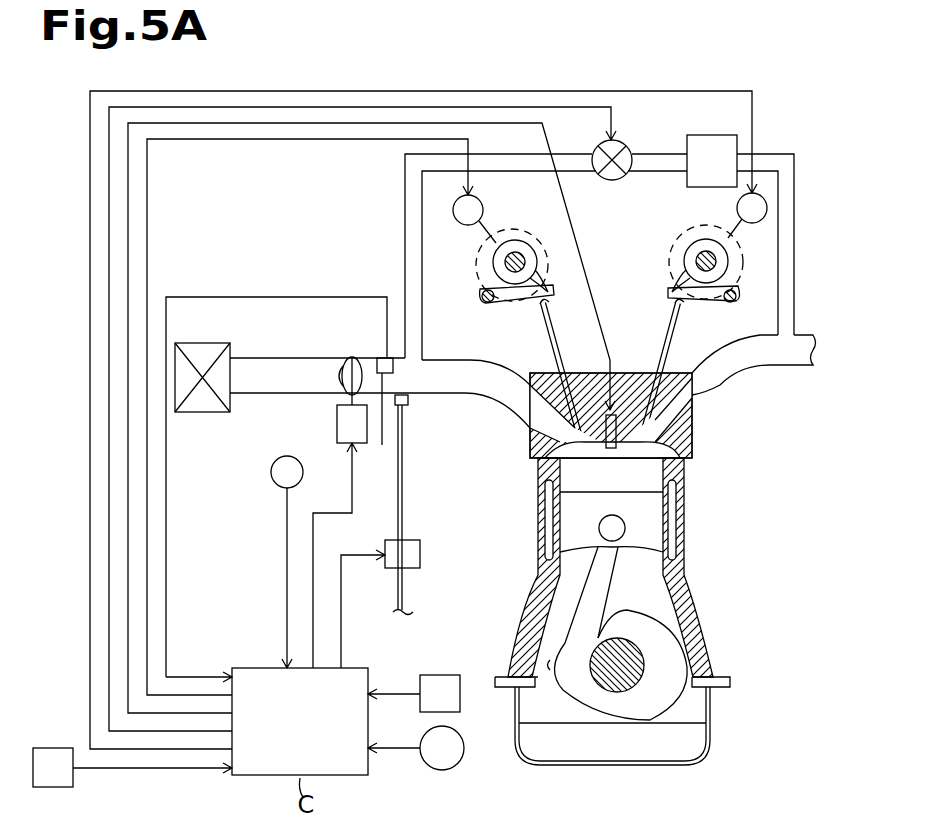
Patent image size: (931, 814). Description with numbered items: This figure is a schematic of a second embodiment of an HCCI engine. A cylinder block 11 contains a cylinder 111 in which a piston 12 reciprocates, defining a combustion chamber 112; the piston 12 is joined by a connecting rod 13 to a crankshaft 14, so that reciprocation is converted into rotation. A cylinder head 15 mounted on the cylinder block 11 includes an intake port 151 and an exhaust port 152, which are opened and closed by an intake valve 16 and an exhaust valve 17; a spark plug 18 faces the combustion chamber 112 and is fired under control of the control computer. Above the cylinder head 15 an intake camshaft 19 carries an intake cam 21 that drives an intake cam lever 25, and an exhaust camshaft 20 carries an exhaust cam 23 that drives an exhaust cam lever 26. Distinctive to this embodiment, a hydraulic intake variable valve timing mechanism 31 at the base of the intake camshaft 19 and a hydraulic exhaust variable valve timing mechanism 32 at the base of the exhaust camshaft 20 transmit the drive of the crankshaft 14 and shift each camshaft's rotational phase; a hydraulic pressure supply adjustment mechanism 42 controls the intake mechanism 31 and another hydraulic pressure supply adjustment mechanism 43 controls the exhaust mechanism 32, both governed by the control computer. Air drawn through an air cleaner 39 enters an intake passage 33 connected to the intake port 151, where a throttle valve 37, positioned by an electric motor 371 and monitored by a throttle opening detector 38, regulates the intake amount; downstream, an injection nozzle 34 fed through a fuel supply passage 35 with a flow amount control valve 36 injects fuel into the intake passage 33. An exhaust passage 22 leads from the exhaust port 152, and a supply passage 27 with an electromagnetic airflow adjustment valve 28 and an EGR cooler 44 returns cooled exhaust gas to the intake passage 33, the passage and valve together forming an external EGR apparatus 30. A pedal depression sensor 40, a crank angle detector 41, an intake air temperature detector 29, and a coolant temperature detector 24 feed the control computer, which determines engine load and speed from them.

The cylinder block 11 is at (712, 634).
The cylinder 111 is at (684, 512).
The combustion chamber 112 is at (660, 475).
The piston 12 is at (546, 562).
The connecting rod 13 is at (600, 594).
The crankshaft 14 is at (598, 678).
The cylinder head 15 is at (530, 450).
The intake port 151 is at (530, 437).
The exhaust port 152 is at (665, 434).
The intake valve 16 is at (546, 468).
The exhaust valve 17 is at (675, 393).
The spark plug 18 is at (612, 458).
The intake camshaft 19 is at (514, 252).
The exhaust camshaft 20 is at (717, 254).
The intake cam 21 is at (537, 247).
The exhaust passage 22 is at (776, 362).
The exhaust cam 23 is at (737, 298).
The coolant temperature detector 24 is at (440, 675).
The intake cam lever 25 is at (509, 305).
The exhaust cam lever 26 is at (705, 302).
The supply passage 27 is at (657, 178).
The airflow adjustment valve 28 is at (613, 183).
The intake air temperature detector 29 is at (379, 418).
The external EGR apparatus 30 is at (662, 226).
The intake variable valve timing mechanism 31 is at (556, 292).
The exhaust variable valve timing mechanism 32 is at (662, 290).
The intake passage 33 is at (448, 360).
The injection nozzle 34 is at (409, 401).
The fuel supply passage 35 is at (402, 515).
The flow amount control valve 36 is at (421, 554).
The throttle valve 37 is at (341, 366).
The electric motor 371 is at (337, 425).
The throttle opening detector 38 is at (271, 472).
The air cleaner 39 is at (201, 350).
The pedal depression sensor 40 is at (53, 748).
The crank angle detector 41 is at (460, 762).
The hydraulic pressure supply adjustment mechanism 42 is at (463, 226).
The hydraulic pressure supply adjustment mechanism 43 is at (768, 207).
The EGR cooler 44 is at (710, 147).